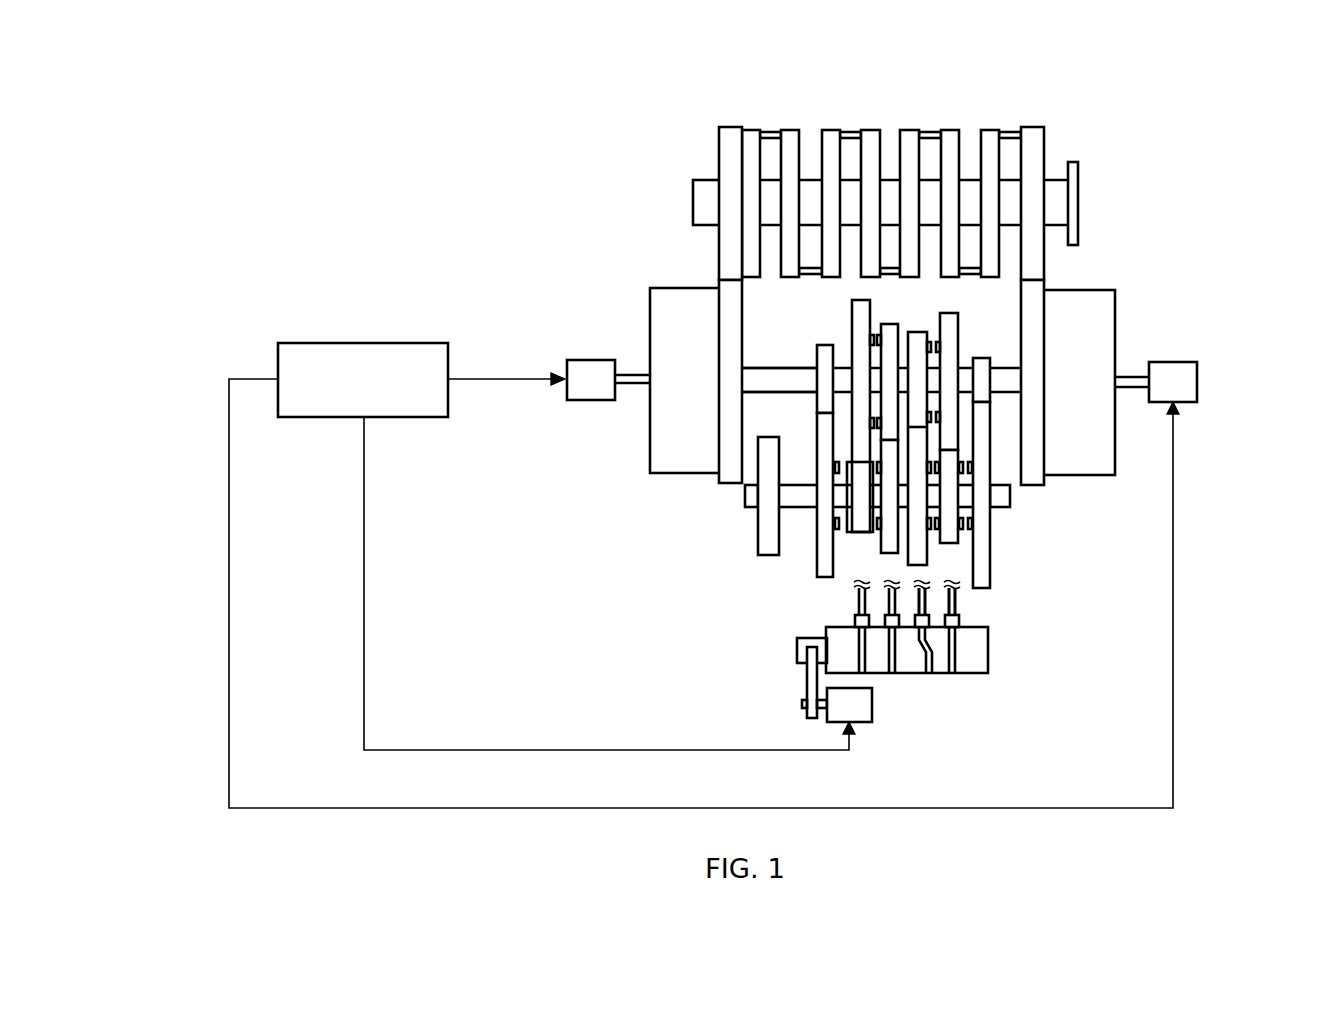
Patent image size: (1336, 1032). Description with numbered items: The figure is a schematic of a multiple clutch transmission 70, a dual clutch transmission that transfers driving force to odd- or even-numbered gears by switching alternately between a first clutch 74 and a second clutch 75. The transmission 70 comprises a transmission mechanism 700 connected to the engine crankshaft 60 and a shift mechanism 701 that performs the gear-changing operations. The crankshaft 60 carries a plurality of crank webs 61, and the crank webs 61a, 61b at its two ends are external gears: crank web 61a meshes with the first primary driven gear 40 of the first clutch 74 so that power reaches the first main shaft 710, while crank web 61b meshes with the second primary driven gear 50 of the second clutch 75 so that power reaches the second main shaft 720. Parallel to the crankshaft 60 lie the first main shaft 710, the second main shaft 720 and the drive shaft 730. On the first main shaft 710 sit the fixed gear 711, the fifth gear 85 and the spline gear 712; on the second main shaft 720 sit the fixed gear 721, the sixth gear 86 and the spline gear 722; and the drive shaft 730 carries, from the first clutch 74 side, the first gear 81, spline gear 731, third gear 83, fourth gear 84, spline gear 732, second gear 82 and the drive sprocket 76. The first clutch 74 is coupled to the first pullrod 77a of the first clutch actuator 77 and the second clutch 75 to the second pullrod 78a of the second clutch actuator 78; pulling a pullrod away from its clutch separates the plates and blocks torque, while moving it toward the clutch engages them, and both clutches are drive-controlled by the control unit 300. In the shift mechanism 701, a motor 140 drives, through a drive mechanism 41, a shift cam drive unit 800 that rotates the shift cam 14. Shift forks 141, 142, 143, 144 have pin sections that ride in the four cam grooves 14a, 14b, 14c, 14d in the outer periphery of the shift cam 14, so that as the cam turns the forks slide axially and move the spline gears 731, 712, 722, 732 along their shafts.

The shift cam 14 is at (970, 673).
The cam groove 14a is at (950, 673).
The cam groove 14b is at (927, 673).
The cam groove 14c is at (892, 673).
The cam groove 14d is at (862, 673).
The first primary driven gear 40 is at (1035, 460).
The drive mechanism 41 is at (807, 685).
The second primary driven gear 50 is at (730, 443).
The crankshaft 60 is at (698, 203).
The crank web 61 is at (790, 137).
The crank web 61a is at (1032, 137).
The crank web 61b is at (725, 141).
The multiple clutch transmission 70 is at (1274, 403).
The first clutch 74 is at (1115, 303).
The second clutch 75 is at (655, 310).
The drive sprocket 76 is at (765, 537).
The first clutch actuator 77 is at (1172, 362).
The first pullrod 77a is at (1128, 377).
The second clutch actuator 78 is at (592, 360).
The second pullrod 78a is at (630, 375).
The first gear 81 is at (982, 563).
The second gear 82 is at (825, 440).
The third gear 83 is at (920, 497).
The fourth gear 84 is at (888, 545).
The fifth gear 85 is at (978, 358).
The sixth gear 86 is at (855, 318).
The motor 140 is at (832, 715).
The shift fork 141 is at (957, 607).
The shift fork 142 is at (923, 600).
The shift fork 143 is at (890, 600).
The shift fork 144 is at (860, 603).
The control unit 300 is at (367, 343).
The transmission mechanism 700 is at (1212, 269).
The shift mechanism 701 is at (1212, 601).
The first main shaft 710 is at (976, 378).
The fixed gear 711 is at (1003, 377).
The spline gear 712 is at (918, 337).
The second main shaft 720 is at (740, 378).
The fixed gear 721 is at (820, 355).
The spline gear 722 is at (890, 333).
The drive shaft 730 is at (748, 496).
The spline gear 731 is at (948, 523).
The spline gear 732 is at (860, 495).
The shift cam drive unit 800 is at (797, 645).